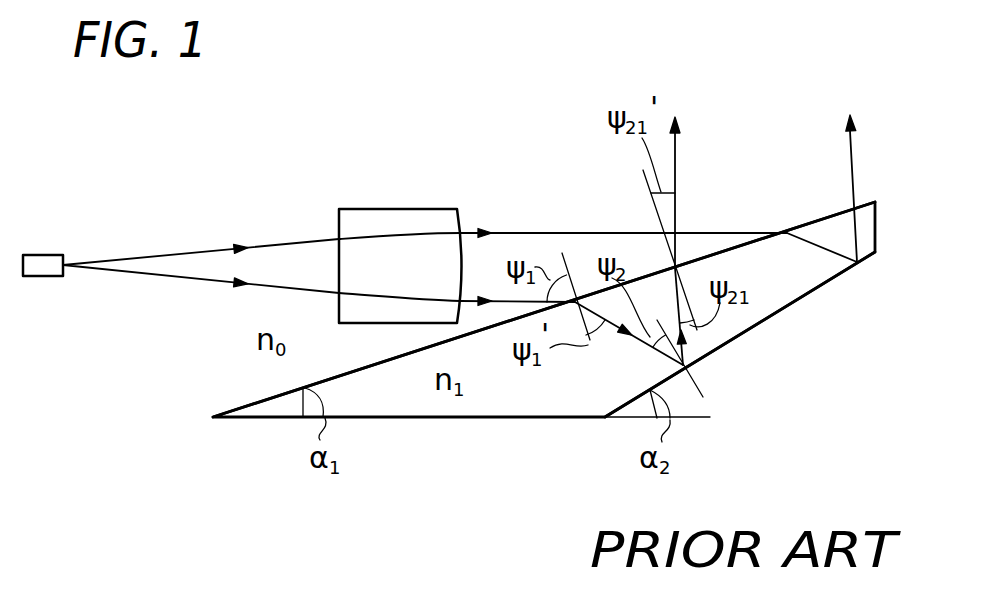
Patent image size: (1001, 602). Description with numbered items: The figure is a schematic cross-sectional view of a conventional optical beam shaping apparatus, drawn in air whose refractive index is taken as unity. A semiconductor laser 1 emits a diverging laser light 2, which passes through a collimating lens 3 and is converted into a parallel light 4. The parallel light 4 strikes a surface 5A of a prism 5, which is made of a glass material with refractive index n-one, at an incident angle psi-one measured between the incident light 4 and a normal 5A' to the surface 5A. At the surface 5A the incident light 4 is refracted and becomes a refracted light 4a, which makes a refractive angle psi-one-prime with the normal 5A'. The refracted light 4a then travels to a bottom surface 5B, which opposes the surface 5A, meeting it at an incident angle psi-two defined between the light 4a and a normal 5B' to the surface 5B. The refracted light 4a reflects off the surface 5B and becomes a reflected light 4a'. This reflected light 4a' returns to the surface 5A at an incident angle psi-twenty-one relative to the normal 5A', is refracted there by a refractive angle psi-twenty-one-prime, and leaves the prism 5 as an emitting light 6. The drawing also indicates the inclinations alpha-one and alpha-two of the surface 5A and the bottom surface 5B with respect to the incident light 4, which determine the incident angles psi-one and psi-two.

The semiconductor laser 1 is at (58, 254).
The laser light 2 is at (180, 282).
The collimating lens 3 is at (420, 209).
The parallel light 4 is at (502, 301).
The refracted light 4a is at (629, 346).
The reflected light 4a' is at (741, 329).
The prism 5 is at (535, 402).
The surface 5A is at (544, 278).
The normal 5A' is at (620, 245).
The bottom surface 5B is at (751, 334).
The normal 5B' is at (745, 379).
The emitting light 6 is at (677, 158).